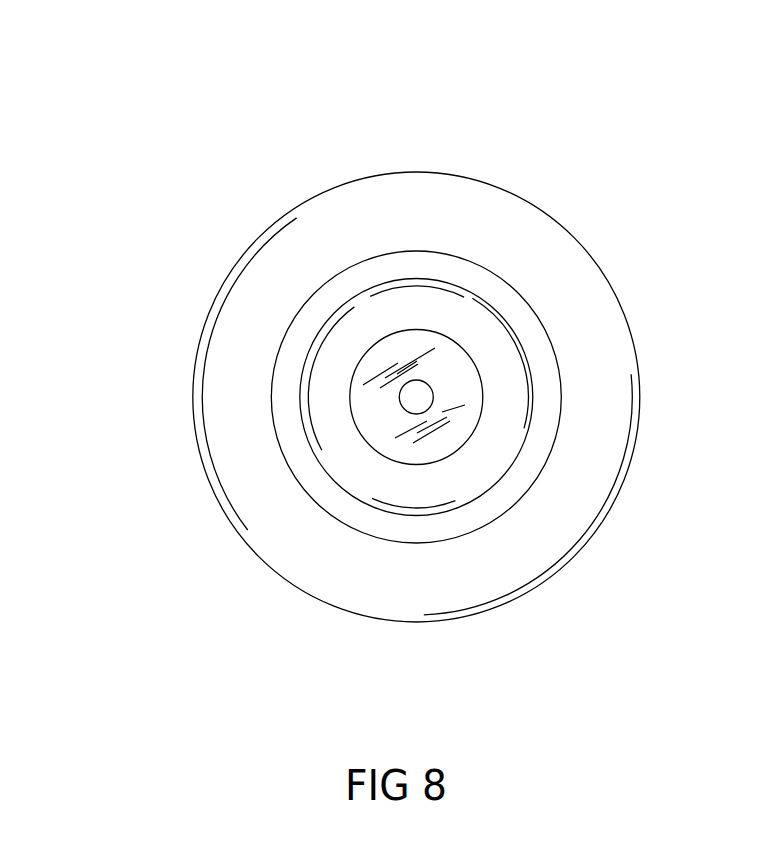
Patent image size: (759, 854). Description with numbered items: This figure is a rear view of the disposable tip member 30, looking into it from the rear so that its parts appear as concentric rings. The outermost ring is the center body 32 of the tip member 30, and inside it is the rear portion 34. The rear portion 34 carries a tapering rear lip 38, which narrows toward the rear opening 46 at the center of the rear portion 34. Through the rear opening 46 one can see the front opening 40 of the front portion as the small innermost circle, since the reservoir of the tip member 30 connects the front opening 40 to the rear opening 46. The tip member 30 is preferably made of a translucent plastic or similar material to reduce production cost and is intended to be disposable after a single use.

The tip member 30 is at (342, 184).
The center body 32 is at (470, 178).
The rear portion 34 is at (587, 285).
The tapering rear lip 38 is at (555, 437).
The rear opening 46 is at (460, 313).
The front opening 40 is at (413, 398).